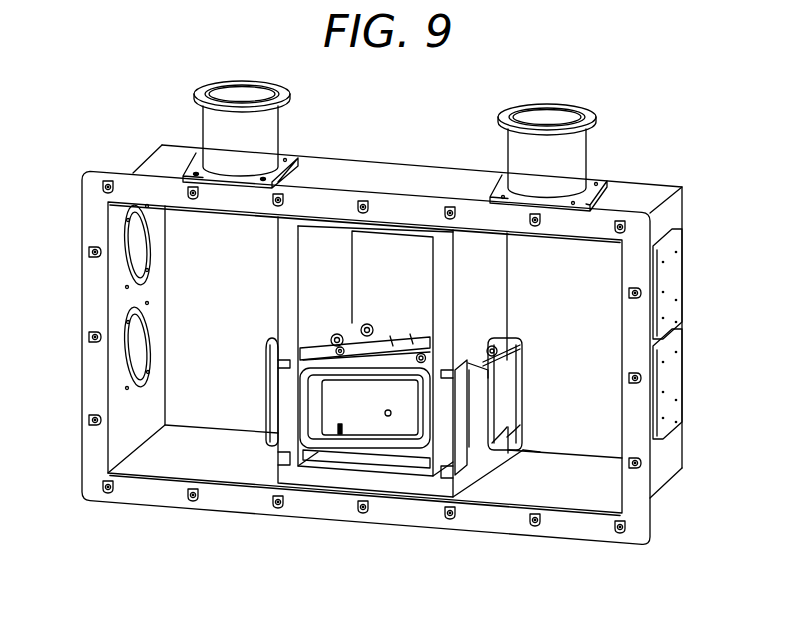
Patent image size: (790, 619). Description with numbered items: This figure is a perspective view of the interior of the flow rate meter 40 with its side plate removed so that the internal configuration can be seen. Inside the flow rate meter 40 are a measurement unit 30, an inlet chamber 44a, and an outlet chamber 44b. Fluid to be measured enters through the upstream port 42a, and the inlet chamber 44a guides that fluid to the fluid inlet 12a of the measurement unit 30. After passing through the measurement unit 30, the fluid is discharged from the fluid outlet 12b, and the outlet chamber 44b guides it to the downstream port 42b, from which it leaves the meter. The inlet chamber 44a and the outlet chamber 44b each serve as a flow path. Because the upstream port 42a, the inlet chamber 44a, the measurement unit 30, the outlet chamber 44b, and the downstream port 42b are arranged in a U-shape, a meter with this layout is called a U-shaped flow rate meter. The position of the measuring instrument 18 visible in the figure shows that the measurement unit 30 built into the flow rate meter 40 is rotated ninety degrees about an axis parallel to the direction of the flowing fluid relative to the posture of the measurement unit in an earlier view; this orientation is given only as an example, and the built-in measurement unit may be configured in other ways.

The flow rate meter 40 is at (678, 150).
The upstream port 42a is at (243, 79).
The downstream port 42b is at (553, 102).
The inlet chamber 44a is at (193, 387).
The outlet chamber 44b is at (573, 427).
The fluid inlet 12a is at (259, 409).
The fluid outlet 12b is at (516, 378).
The measuring instrument 18 is at (363, 433).
The measurement unit 30 is at (393, 460).